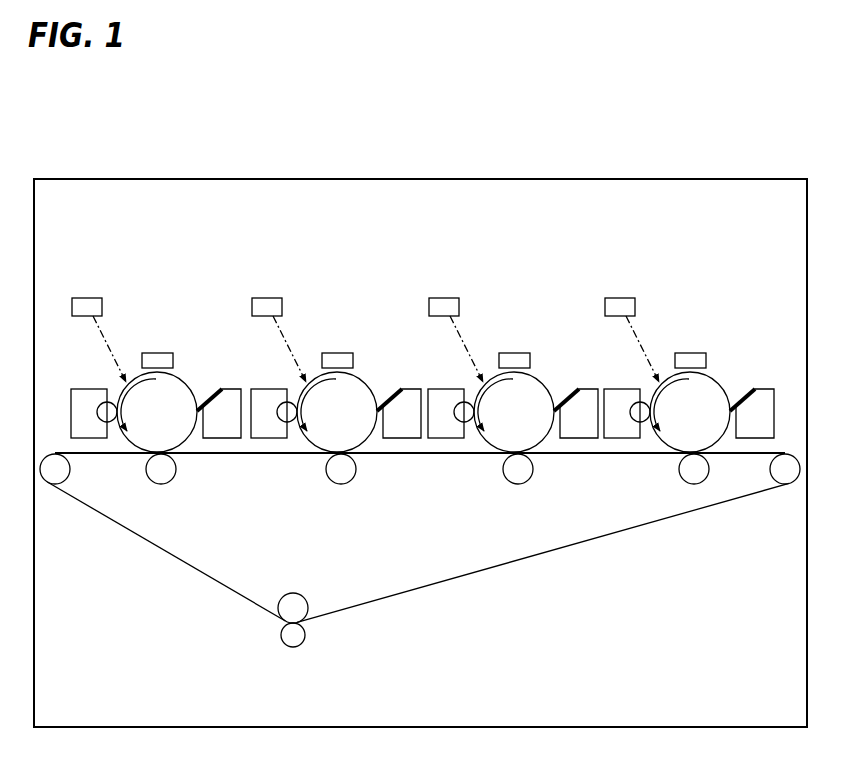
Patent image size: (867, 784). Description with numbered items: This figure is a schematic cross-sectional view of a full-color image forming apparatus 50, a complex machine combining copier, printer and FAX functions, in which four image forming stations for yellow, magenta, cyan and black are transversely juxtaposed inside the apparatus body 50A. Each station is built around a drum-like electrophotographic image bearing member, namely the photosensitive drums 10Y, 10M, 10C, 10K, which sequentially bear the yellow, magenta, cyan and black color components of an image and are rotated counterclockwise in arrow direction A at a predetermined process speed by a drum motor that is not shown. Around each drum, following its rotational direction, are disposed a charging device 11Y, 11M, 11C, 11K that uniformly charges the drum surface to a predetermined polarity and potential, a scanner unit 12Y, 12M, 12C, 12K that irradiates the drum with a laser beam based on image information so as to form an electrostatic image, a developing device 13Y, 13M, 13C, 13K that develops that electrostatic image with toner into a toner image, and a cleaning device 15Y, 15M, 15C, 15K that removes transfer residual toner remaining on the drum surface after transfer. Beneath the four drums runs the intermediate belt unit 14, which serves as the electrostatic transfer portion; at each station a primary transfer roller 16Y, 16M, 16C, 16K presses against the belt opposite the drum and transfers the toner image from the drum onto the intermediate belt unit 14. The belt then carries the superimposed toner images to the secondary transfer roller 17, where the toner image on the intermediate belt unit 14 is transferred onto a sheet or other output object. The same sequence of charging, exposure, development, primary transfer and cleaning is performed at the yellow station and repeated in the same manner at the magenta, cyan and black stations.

The image forming apparatus 50 is at (388, 137).
The apparatus body 50A is at (472, 179).
The photosensitive drum 10Y is at (175, 388).
The photosensitive drum 10M is at (355, 388).
The photosensitive drum 10C is at (532, 388).
The photosensitive drum 10K is at (708, 388).
The charging device 11Y is at (147, 352).
The charging device 11M is at (327, 352).
The charging device 11C is at (504, 352).
The charging device 11K is at (680, 352).
The scanner unit 12Y is at (88, 303).
The scanner unit 12M is at (268, 303).
The scanner unit 12C is at (445, 303).
The scanner unit 12K is at (621, 303).
The developing device 13Y is at (83, 392).
The developing device 13M is at (290, 392).
The developing device 13C is at (468, 392).
The developing device 13K is at (644, 392).
The cleaning device 15Y is at (228, 393).
The cleaning device 15M is at (408, 393).
The cleaning device 15C is at (585, 393).
The cleaning device 15K is at (761, 393).
The primary transfer roller 16Y is at (163, 482).
The primary transfer roller 16M is at (342, 481).
The primary transfer roller 16C is at (518, 481).
The primary transfer roller 16K is at (693, 482).
The intermediate belt unit 14 is at (195, 569).
The secondary transfer roller 17 is at (293, 600).